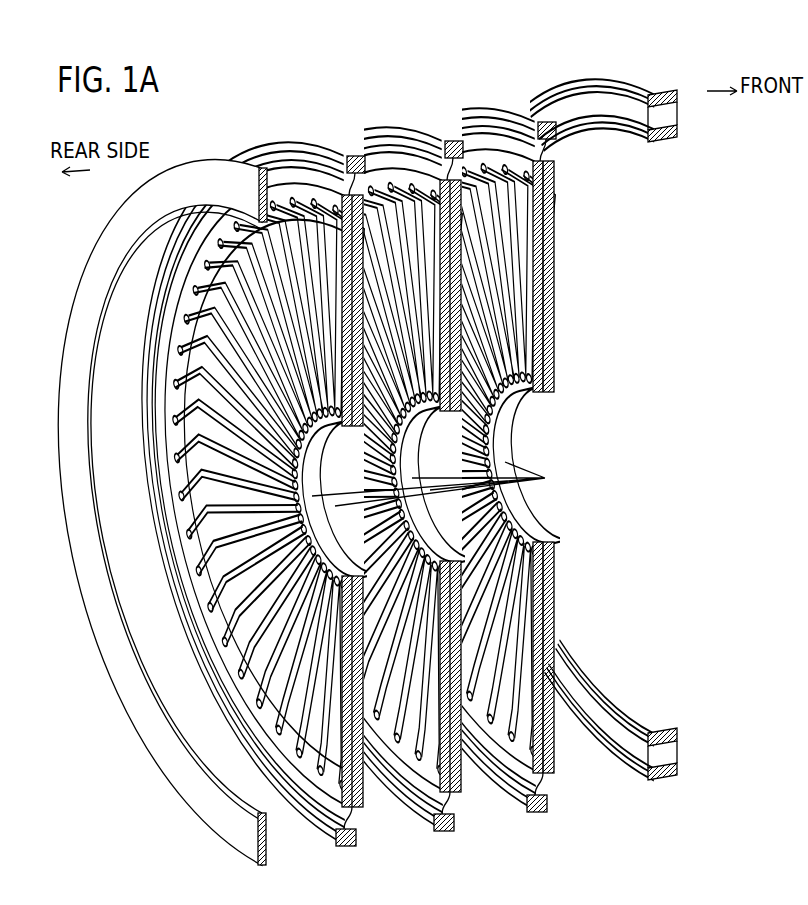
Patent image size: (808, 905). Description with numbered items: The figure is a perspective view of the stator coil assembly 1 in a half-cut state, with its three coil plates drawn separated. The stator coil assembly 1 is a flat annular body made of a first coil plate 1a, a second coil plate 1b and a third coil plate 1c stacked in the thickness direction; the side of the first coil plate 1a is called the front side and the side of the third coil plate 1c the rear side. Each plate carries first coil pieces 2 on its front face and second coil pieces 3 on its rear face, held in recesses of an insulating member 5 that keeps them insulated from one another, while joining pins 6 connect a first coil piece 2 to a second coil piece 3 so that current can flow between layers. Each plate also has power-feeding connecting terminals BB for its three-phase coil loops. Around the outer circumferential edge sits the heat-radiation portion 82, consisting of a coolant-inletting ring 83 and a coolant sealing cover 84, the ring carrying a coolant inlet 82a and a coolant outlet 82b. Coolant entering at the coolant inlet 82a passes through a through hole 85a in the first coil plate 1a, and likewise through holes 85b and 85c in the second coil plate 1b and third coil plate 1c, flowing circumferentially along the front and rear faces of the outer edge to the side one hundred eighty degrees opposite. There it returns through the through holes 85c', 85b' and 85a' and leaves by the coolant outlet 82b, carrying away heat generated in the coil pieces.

The stator coil assembly 1 is at (706, 288).
The first coil plate 1a is at (490, 95).
The second coil plate 1b is at (363, 118).
The third coil plate 1c is at (255, 140).
The first coil piece 2 is at (553, 287).
The second coil piece 3 is at (553, 313).
The insulating member 5 is at (553, 232).
The joining pin 6 is at (173, 397).
The heat-radiation portion 82 is at (157, 508).
The coolant inlet 82a is at (660, 760).
The coolant outlet 82b is at (667, 117).
The coolant-inletting ring 83 is at (627, 137).
The coolant sealing cover 84 is at (160, 168).
The through hole 85a is at (573, 789).
The through hole 85b is at (479, 808).
The through hole 85c is at (382, 825).
The through hole 85a' is at (523, 116).
The through hole 85b' is at (414, 134).
The through hole 85c' is at (314, 151).
The power-feeding connecting terminal BB is at (446, 484).